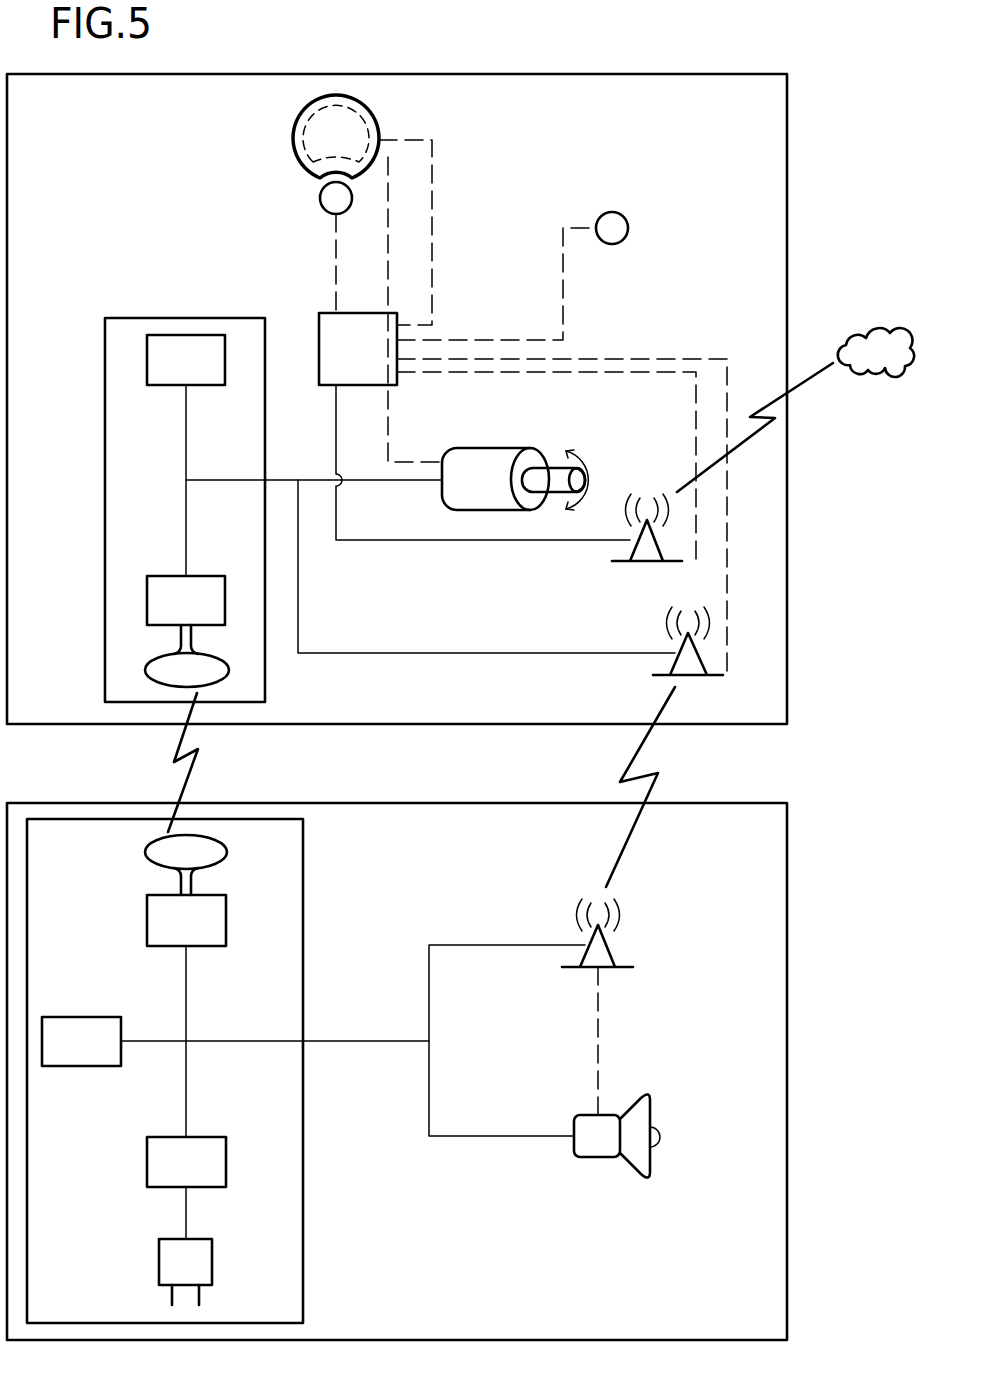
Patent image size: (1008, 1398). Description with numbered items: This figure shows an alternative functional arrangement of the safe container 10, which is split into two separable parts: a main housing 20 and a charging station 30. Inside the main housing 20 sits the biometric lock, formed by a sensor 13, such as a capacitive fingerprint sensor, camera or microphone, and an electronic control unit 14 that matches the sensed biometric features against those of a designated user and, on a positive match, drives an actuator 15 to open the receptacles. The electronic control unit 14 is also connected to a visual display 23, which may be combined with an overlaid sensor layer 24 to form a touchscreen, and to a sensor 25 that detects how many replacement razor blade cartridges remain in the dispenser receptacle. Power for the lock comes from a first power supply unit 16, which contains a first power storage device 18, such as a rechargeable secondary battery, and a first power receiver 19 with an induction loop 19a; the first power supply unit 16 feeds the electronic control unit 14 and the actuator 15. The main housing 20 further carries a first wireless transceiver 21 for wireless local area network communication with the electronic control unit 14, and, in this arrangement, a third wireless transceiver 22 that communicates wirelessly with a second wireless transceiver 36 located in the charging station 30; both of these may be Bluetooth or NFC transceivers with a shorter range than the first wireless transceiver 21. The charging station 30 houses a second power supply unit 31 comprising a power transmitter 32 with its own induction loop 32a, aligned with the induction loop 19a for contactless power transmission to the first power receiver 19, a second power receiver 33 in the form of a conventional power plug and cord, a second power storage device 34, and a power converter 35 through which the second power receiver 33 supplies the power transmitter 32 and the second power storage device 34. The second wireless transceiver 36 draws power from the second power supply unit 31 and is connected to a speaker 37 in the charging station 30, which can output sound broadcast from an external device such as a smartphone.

The safe container 10 is at (851, 125).
The sensor 13 is at (319, 198).
The electronic control unit 14 is at (371, 363).
The actuator 15 is at (494, 447).
The first power supply unit 16 is at (126, 318).
The first power storage device 18 is at (199, 373).
The first power receiver 19 is at (199, 614).
The induction loop 19a is at (198, 652).
The main housing 20 is at (787, 243).
The first wireless transceiver 21 is at (631, 563).
The third wireless transceiver 22 is at (712, 679).
The visual display 23 is at (375, 113).
The sensor layer 24 is at (293, 140).
The sensor 25 is at (628, 219).
The charging station 30 is at (787, 853).
The second power supply unit 31 is at (303, 873).
The power transmitter 32 is at (199, 933).
The induction loop 32a is at (211, 866).
The second power receiver 33 is at (205, 1238).
The second power storage device 34 is at (95, 1055).
The power converter 35 is at (199, 1175).
The second wireless transceiver 36 is at (608, 945).
The speaker 37 is at (601, 1160).